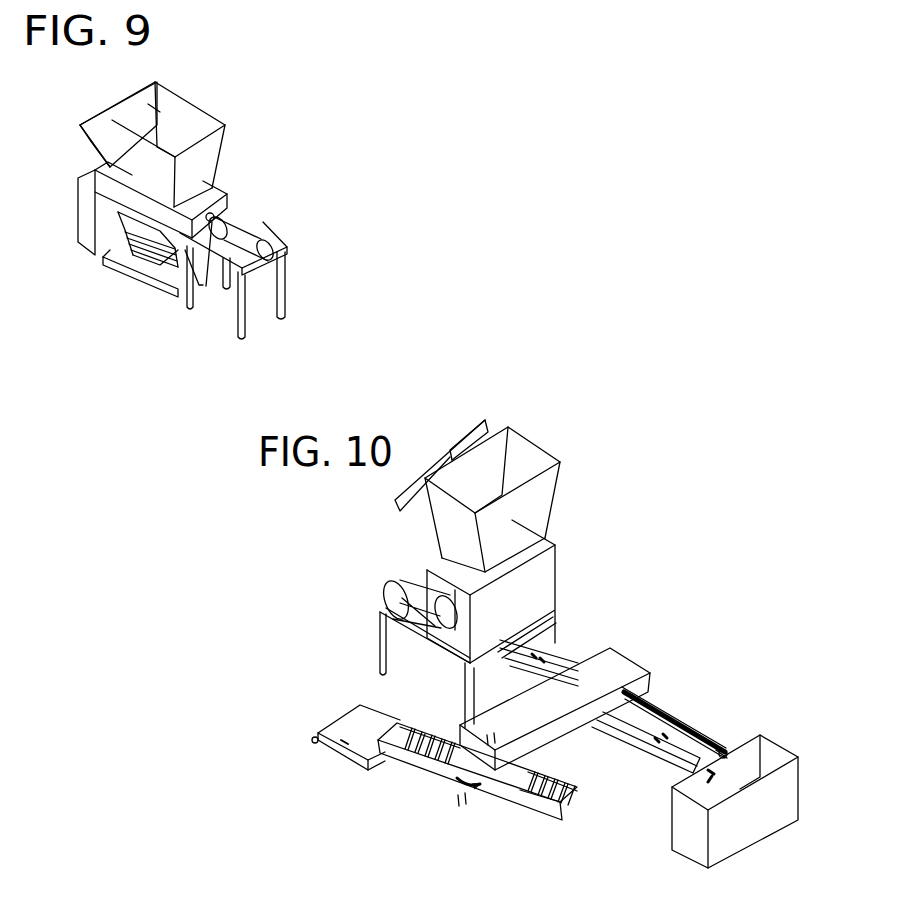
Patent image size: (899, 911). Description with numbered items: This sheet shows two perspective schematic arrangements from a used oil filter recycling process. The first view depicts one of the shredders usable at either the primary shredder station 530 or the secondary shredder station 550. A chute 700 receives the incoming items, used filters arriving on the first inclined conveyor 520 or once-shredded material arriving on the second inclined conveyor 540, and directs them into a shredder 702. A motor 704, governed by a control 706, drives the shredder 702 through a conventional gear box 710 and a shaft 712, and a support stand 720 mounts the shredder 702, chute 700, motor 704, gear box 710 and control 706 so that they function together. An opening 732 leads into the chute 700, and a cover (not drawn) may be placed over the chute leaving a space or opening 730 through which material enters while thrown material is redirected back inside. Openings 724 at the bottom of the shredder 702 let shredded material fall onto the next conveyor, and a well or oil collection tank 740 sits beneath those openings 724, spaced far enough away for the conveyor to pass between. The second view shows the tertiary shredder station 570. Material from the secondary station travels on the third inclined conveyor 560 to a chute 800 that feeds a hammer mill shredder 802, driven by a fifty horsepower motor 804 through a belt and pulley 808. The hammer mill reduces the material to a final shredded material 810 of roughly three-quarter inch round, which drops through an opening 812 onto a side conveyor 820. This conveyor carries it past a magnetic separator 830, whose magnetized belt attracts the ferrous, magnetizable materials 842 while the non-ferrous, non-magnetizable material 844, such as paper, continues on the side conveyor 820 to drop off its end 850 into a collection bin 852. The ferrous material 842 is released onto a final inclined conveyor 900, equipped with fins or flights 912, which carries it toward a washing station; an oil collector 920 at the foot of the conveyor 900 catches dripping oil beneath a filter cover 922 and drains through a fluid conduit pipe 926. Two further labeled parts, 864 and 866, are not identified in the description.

In FIG. 9, the first inclined conveyor 520 is at (92, 118).
In FIG. 9, the primary shredder station 530 is at (228, 62).
In FIG. 9, the secondary shredder station 550 is at (193, 198).
In FIG. 9, the third inclined conveyor 560 is at (132, 270).
In FIG. 10, the third inclined conveyor 560 is at (440, 448).
In FIG. 10, the tertiary shredder station 570 is at (498, 360).
In FIG. 9, the chute 700 is at (226, 135).
In FIG. 9, the shredder 702 is at (222, 190).
In FIG. 9, the motor 704 is at (250, 230).
In FIG. 9, the control 706 is at (80, 242).
In FIG. 9, the gear box 710 is at (215, 215).
In FIG. 9, the shaft 712 is at (213, 232).
In FIG. 9, the support stand 720 is at (288, 272).
In FIG. 9, the openings 724 is at (130, 245).
In FIG. 9, the space or opening 730 is at (140, 100).
In FIG. 9, the opening 732 is at (152, 108).
In FIG. 9, the well or oil collection tank 740 is at (200, 280).
In FIG. 9, the second inclined conveyor 540 is at (135, 270).
In FIG. 10, the chute 800 is at (545, 440).
In FIG. 10, the hammer mill shredder 802 is at (560, 560).
In FIG. 10, the motor 804 is at (395, 570).
In FIG. 10, the pulley 808 is at (477, 606).
In FIG. 10, the final shredded material 810 is at (566, 652).
In FIG. 10, the opening 812 is at (556, 628).
In FIG. 10, the side conveyor 820 is at (672, 708).
In FIG. 10, the magnetic separator 830 is at (652, 672).
In FIG. 10, the ferrous, magnetizable materials 842 is at (532, 793).
In FIG. 10, the non-ferrous, non-magnetizable material 844 is at (715, 783).
In FIG. 10, the end 850 is at (722, 748).
In FIG. 10, the collection bin 852 is at (770, 740).
In FIG. 10, the rail support 864 is at (660, 742).
In FIG. 10, the linkage 866 is at (413, 618).
In FIG. 10, the final inclined conveyor 900 is at (540, 828).
In FIG. 10, the fins or flights 912 is at (525, 790).
In FIG. 10, the oil collector 920 is at (340, 715).
In FIG. 10, the filter cover 922 is at (345, 742).
In FIG. 10, the fluid conduit pipe 926 is at (315, 740).